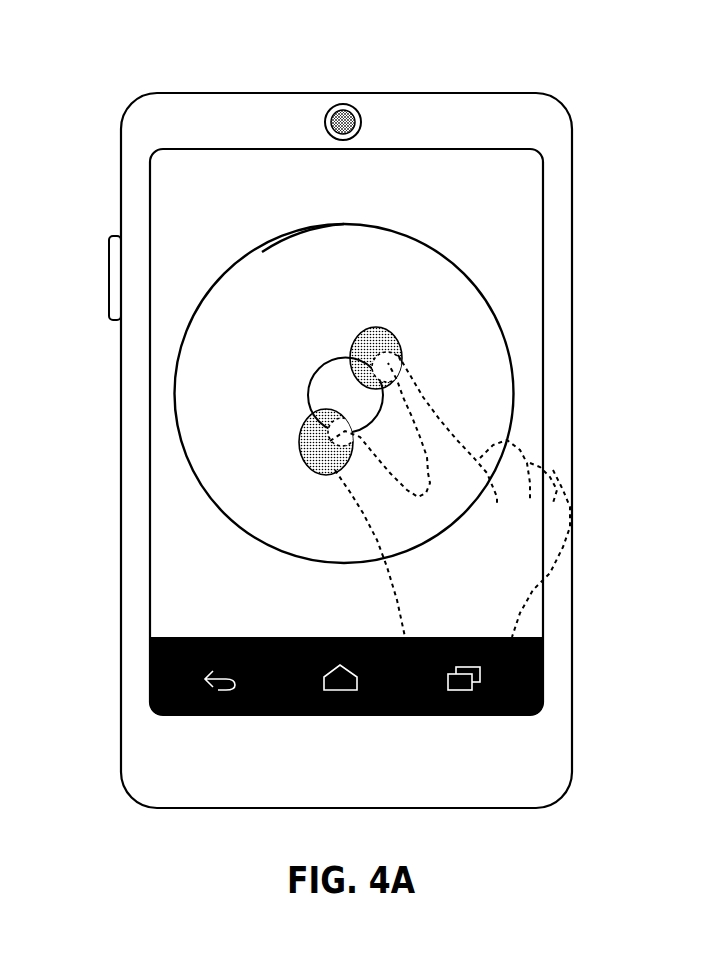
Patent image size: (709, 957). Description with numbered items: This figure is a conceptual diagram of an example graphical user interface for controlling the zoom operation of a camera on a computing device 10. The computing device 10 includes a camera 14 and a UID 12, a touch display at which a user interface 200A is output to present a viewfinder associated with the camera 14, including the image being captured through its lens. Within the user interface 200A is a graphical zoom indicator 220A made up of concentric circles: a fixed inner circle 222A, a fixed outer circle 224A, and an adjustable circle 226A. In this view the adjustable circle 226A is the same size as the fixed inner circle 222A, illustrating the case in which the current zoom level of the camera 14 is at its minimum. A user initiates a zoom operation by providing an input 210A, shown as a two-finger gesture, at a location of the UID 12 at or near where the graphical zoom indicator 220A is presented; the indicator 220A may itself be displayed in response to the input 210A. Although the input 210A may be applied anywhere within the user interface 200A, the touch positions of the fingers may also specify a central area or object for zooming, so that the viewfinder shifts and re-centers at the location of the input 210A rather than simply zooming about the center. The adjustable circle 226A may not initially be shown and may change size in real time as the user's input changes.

The computing device 10 is at (378, 76).
The UID 12 is at (160, 175).
The camera 14 is at (320, 108).
The user interface 200A is at (530, 213).
The input 210A is at (338, 418).
The graphical zoom indicator 220A is at (360, 220).
The fixed inner circle 222A is at (310, 408).
The fixed outer circle 224A is at (262, 252).
The adjustable circle 226A is at (345, 358).